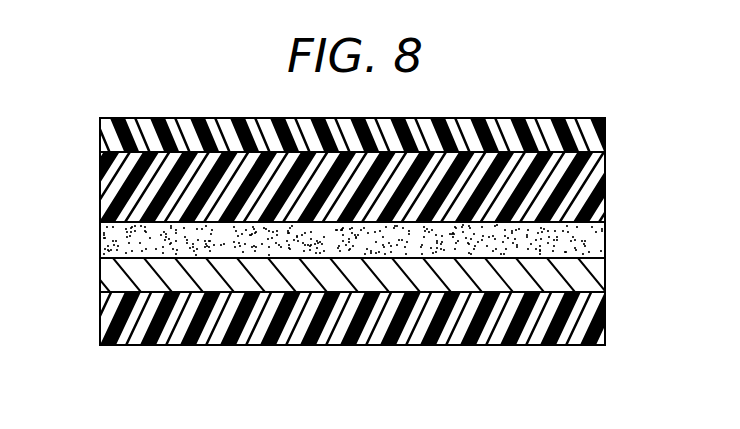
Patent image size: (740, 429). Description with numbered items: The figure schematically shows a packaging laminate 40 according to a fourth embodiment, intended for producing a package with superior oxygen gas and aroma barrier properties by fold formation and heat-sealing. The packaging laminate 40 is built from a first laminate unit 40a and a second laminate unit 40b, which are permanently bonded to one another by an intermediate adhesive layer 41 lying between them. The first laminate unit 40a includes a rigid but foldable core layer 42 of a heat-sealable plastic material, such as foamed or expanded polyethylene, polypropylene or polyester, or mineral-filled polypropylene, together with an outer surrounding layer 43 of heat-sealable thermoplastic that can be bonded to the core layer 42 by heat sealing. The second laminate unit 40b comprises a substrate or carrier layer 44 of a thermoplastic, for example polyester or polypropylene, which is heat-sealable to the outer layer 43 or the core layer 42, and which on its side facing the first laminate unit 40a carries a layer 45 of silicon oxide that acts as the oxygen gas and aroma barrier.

The packaging laminate 40 is at (616, 102).
The first laminate unit 40a is at (612, 118).
The second laminate unit 40b is at (612, 262).
The intermediate adhesive layer 41 is at (100, 235).
The core layer 42 is at (100, 182).
The outer surrounding layer 43 is at (100, 131).
The substrate or carrier layer 44 is at (100, 311).
The oxygen gas and aroma barrier layer 45 is at (100, 271).